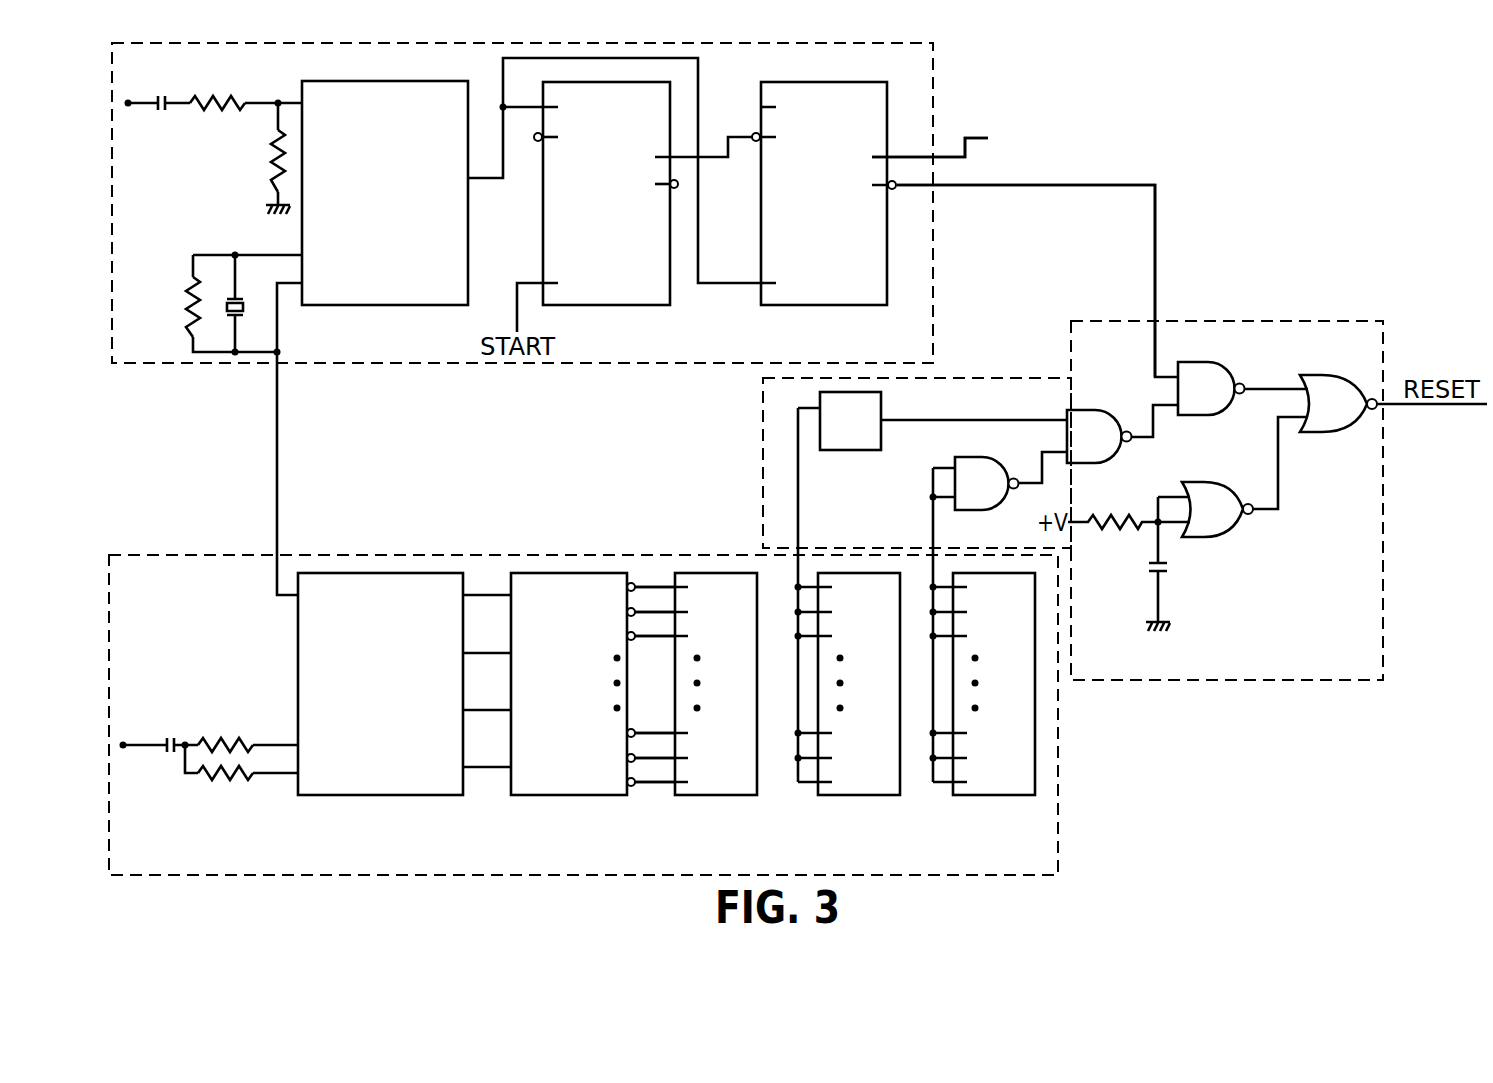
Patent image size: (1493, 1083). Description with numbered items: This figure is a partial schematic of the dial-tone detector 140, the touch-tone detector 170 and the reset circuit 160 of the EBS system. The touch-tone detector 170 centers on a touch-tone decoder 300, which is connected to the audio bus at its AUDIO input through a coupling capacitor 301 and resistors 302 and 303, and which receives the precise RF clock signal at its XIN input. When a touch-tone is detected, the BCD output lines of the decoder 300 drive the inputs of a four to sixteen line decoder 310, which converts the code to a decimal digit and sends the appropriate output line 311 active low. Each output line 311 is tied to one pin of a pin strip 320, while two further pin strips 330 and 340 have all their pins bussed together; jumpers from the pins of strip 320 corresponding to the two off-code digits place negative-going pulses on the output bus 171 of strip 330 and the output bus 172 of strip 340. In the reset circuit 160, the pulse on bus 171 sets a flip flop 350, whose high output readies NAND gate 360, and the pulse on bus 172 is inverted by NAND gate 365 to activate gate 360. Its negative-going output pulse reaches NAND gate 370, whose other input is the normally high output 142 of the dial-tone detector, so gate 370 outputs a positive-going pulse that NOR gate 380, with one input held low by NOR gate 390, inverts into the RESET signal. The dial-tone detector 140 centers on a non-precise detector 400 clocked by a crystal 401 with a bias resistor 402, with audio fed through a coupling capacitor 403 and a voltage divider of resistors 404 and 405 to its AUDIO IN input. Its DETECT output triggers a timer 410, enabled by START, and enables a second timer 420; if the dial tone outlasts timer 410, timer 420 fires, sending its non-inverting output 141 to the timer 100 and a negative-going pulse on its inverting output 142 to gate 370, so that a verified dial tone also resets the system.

The dial-tone detector 140 is at (615, 364).
The non-precise detector 400 is at (405, 273).
The crystal 401 is at (230, 297).
The bias resistor 402 is at (187, 289).
The coupling capacitor 403 is at (162, 115).
The resistor 404 is at (218, 97).
The resistor 405 is at (267, 161).
The timer 410 is at (668, 305).
The second timer 420 is at (885, 305).
The non-inverting output 141 is at (943, 157).
The timer 100 is at (1070, 137).
The inverting output 142 is at (1155, 262).
The reset circuit 160 is at (1298, 682).
The NAND gate 360 is at (1094, 407).
The NAND gate 365 is at (953, 460).
The NAND gate 370 is at (1210, 362).
The NOR gate 380 is at (1332, 375).
The NOR gate 390 is at (1225, 535).
The touch-tone detector 170 is at (1058, 790).
The touch-tone decoder 300 is at (418, 795).
The coupling capacitor 301 is at (165, 740).
The resistor 302 is at (222, 740).
The resistor 303 is at (228, 782).
The 4 to 16 line decoder 310 is at (553, 795).
The output line 311 is at (608, 807).
The pin strip 320 is at (738, 795).
The pin strip 330 is at (870, 795).
The pin strip 340 is at (998, 795).
The flip flop 350 is at (847, 450).
The output bus 171 is at (798, 530).
The output bus 172 is at (933, 543).